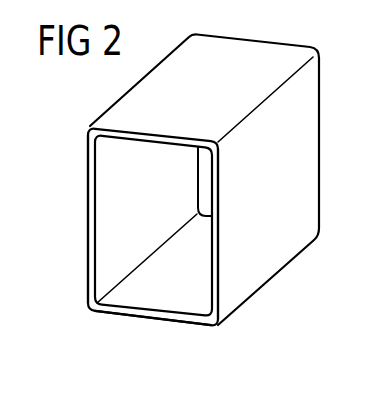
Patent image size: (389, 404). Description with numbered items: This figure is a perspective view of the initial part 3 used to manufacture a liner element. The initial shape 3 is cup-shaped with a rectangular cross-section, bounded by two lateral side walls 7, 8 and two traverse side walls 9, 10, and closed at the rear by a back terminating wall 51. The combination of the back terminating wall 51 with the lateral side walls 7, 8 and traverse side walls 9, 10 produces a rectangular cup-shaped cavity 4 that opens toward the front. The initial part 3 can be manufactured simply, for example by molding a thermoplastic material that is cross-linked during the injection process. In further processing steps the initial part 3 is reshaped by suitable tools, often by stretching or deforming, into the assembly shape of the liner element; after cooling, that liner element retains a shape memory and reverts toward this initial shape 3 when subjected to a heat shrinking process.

The initial shape 3 is at (328, 129).
The rectangular cup-shaped cavity 4 is at (107, 242).
The lateral side wall 7 is at (215, 280).
The lateral side wall 8 is at (90, 194).
The traverse side wall 9 is at (265, 53).
The traverse side wall 10 is at (133, 323).
The back terminating wall 51 is at (207, 168).